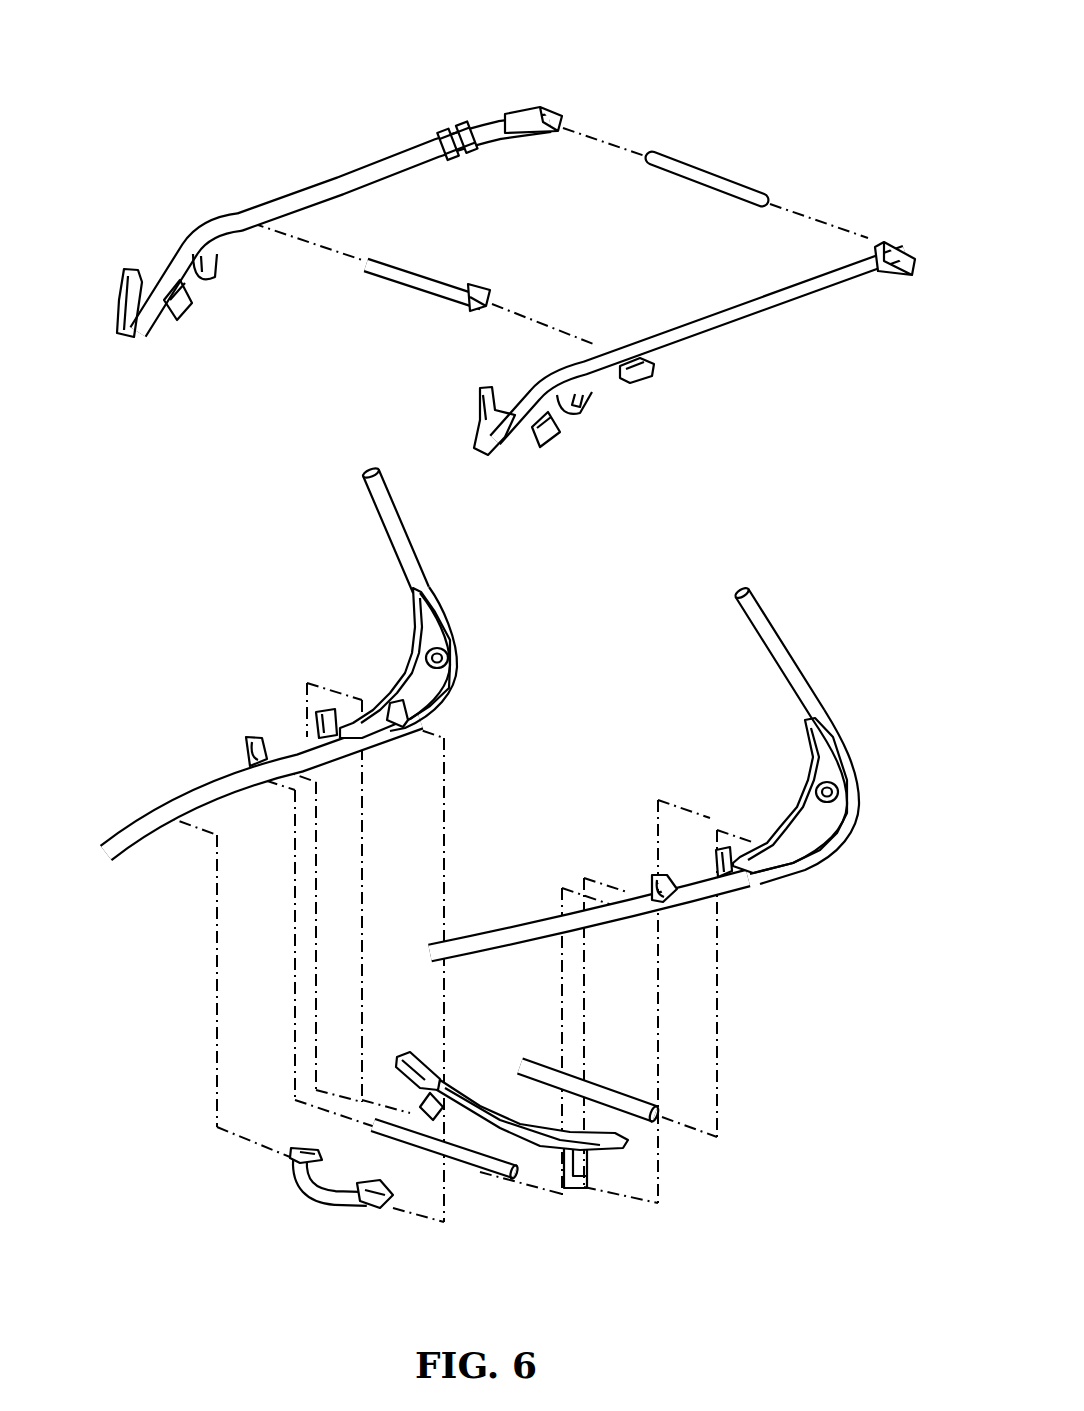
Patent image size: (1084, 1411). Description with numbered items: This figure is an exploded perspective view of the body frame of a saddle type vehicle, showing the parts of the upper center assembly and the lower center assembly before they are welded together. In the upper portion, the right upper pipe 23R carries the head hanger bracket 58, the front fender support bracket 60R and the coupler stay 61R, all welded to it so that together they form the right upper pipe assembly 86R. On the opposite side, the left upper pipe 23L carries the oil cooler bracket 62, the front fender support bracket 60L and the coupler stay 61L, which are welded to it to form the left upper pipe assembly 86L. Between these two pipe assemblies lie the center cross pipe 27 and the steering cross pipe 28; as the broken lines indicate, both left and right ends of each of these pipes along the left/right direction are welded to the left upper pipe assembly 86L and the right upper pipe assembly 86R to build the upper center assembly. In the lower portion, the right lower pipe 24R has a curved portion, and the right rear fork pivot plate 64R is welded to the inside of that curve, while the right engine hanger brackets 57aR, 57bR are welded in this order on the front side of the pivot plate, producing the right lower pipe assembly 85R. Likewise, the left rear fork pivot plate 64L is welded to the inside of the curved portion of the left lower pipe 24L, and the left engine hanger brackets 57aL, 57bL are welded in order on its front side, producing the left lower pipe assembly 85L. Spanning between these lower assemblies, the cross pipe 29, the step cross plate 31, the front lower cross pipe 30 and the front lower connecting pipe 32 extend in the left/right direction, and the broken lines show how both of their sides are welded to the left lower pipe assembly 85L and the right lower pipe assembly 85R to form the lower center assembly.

The right upper pipe 23R is at (337, 176).
The left upper pipe 23L is at (757, 312).
The right upper pipe assembly 86R is at (531, 111).
The left upper pipe assembly 86L is at (831, 301).
The head hanger bracket 58 is at (452, 124).
The center cross pipe 27 is at (740, 178).
The steering cross pipe 28 is at (447, 262).
The front fender support bracket 60R is at (210, 268).
The front fender support bracket 60L is at (587, 412).
The coupler stay 61R is at (185, 312).
The coupler stay 61L is at (555, 442).
The oil cooler bracket 62 is at (645, 381).
The right lower pipe 24R is at (391, 538).
The left lower pipe 24L is at (777, 668).
The right lower pipe assembly 85R is at (435, 602).
The left lower pipe assembly 85L is at (779, 735).
The right rear fork pivot plate 64R is at (408, 682).
The left rear fork pivot plate 64L is at (797, 810).
The right engine hanger bracket 57aR is at (252, 739).
The right engine hanger bracket 57bR is at (323, 696).
The left engine hanger bracket 57aL is at (681, 880).
The left engine hanger bracket 57bL is at (719, 878).
The cross pipe 29 is at (617, 1094).
The front lower cross pipe 30 is at (473, 1178).
The step cross plate 31 is at (500, 1114).
The front lower connecting pipe 32 is at (310, 1199).